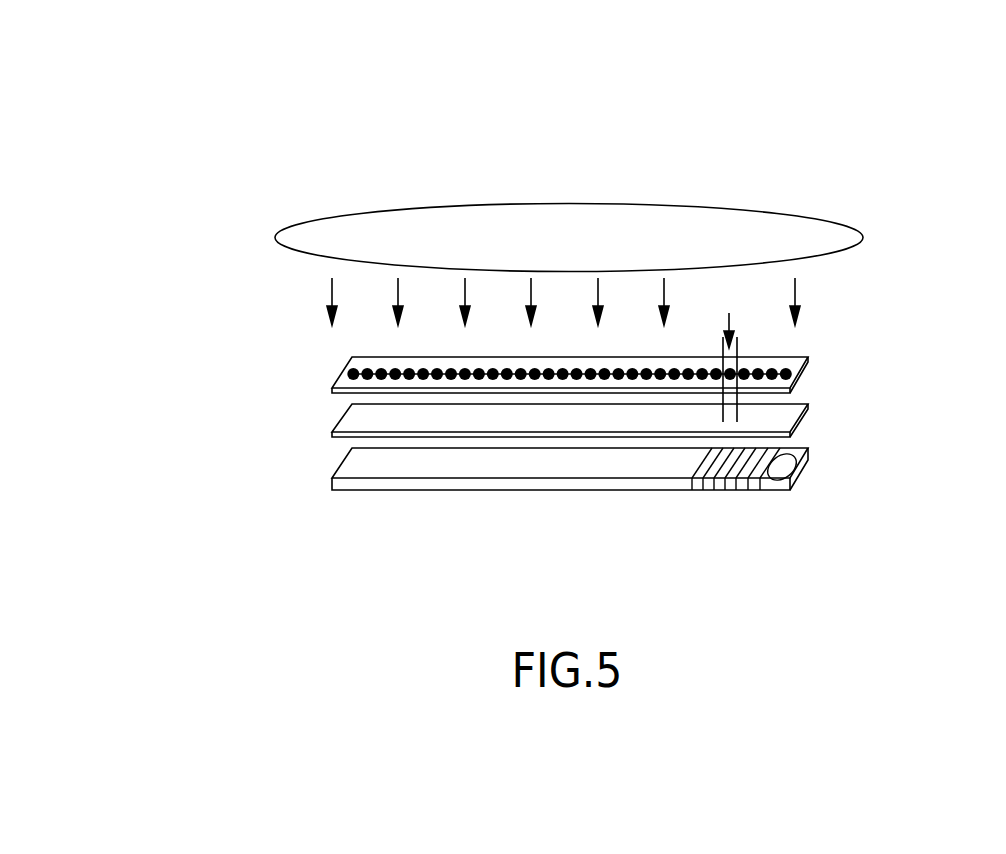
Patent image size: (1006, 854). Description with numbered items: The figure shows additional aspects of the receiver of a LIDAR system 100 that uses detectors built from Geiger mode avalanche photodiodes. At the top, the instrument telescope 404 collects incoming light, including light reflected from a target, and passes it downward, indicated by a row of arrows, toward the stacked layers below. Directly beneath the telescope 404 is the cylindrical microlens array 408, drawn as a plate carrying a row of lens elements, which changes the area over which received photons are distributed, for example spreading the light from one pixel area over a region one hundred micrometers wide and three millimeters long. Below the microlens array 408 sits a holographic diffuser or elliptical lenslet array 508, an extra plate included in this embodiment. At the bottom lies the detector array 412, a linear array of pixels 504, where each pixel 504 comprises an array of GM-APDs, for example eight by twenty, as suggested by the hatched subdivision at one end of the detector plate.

The LIDAR system 100 is at (644, 147).
The telescope 404 is at (863, 240).
The cylindrical microlens array 408 is at (348, 361).
The holographic diffuser or elliptical lenslet array 508 is at (333, 433).
The detector array 412 is at (343, 491).
The pixel 504 is at (732, 478).